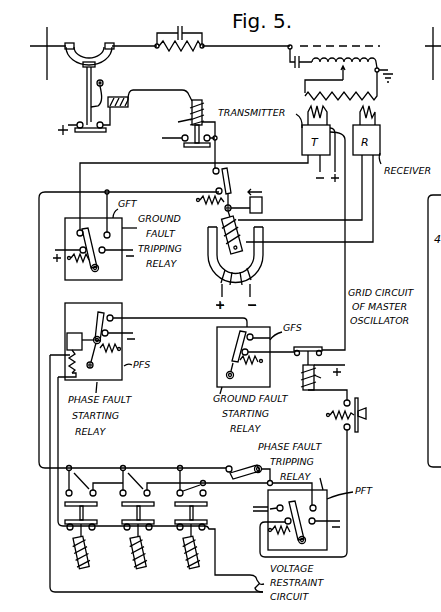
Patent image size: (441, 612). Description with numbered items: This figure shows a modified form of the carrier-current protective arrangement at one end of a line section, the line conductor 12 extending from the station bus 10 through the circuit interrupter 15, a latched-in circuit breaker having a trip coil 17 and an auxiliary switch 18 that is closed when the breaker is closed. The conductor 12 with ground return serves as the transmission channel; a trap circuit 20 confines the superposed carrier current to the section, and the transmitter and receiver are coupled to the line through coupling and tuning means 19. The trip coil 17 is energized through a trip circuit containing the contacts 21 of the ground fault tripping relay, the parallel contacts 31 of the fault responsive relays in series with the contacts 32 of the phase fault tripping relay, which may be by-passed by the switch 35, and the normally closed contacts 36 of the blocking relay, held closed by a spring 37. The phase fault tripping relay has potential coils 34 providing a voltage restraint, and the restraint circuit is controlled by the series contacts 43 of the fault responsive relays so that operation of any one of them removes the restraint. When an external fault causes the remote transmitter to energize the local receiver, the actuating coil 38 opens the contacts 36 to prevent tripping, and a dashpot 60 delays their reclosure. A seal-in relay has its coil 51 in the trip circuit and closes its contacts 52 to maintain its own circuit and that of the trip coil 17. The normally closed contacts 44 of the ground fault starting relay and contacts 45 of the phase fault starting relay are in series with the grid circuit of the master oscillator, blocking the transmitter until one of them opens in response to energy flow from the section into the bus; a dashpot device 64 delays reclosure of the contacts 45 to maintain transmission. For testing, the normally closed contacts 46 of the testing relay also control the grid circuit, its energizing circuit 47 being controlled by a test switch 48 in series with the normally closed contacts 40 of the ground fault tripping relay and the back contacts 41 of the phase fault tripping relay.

The bus 10 is at (47, 78).
The line conductor 12 is at (247, 48).
The circuit interrupter 15 is at (105, 55).
The trip coil 17 is at (114, 96).
The auxiliary switch 18 is at (93, 132).
The coupling and tuning means 19 is at (365, 87).
The trap circuit 20 is at (202, 46).
The contacts of ground fault tripping relay 21 is at (109, 238).
The contacts of fault responsive relays 31 is at (211, 490).
The contacts of phase fault tripping relay 32 is at (315, 520).
The potential coils 34 is at (88, 382).
The switch 35 is at (247, 466).
The contacts of blocking relay 36 is at (216, 189).
The spring 37 is at (198, 201).
The actuating coil 38 is at (246, 232).
The contacts of ground fault tripping relay 40 is at (81, 248).
The back contacts of phase fault tripping relay 41 is at (279, 511).
The contacts of fault responsive relays 43 is at (94, 530).
The contacts of ground fault starting relay 44 is at (248, 352).
The contacts of phase fault starting relay 45 is at (108, 331).
The contacts of testing relay 46 is at (306, 356).
The energizing circuit 47 is at (303, 378).
The test switch 48 is at (359, 406).
The coil of seal-in relay 51 is at (192, 107).
The contacts of seal-in relay 52 is at (183, 141).
The dashpot 60 is at (262, 205).
The dashpot device 64 is at (76, 333).